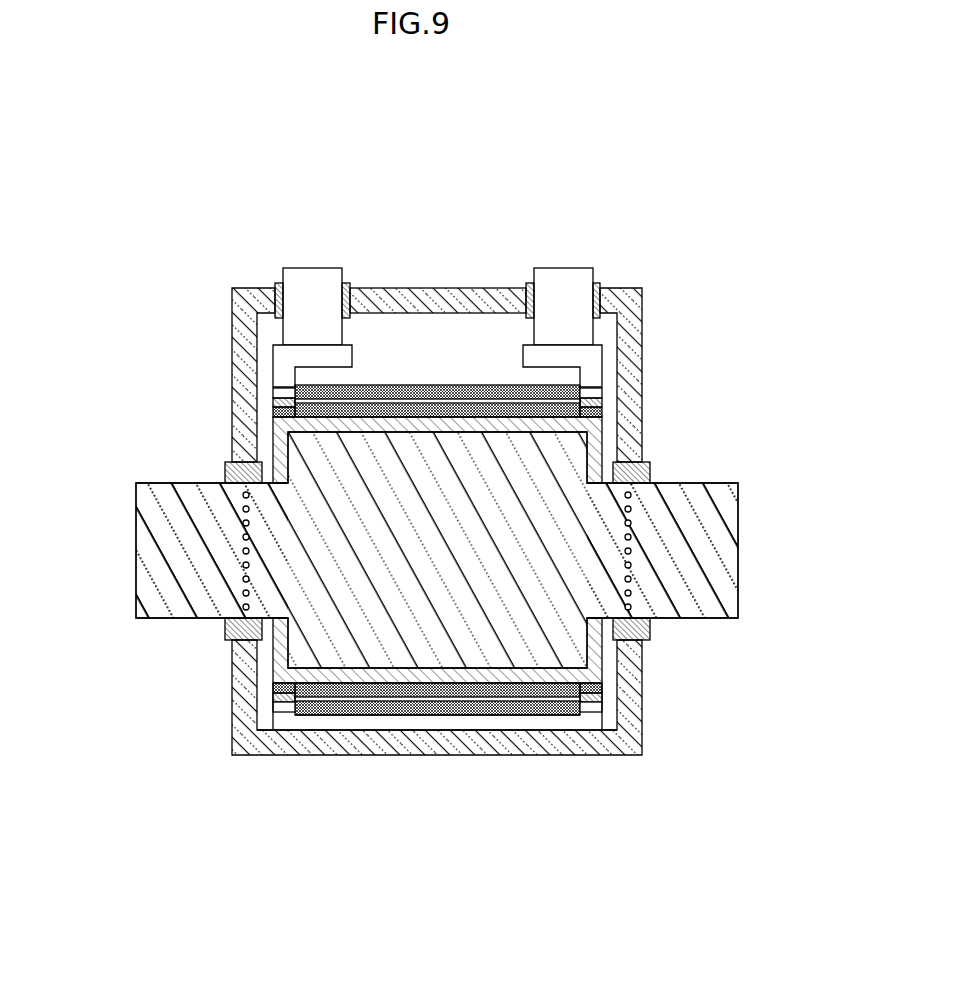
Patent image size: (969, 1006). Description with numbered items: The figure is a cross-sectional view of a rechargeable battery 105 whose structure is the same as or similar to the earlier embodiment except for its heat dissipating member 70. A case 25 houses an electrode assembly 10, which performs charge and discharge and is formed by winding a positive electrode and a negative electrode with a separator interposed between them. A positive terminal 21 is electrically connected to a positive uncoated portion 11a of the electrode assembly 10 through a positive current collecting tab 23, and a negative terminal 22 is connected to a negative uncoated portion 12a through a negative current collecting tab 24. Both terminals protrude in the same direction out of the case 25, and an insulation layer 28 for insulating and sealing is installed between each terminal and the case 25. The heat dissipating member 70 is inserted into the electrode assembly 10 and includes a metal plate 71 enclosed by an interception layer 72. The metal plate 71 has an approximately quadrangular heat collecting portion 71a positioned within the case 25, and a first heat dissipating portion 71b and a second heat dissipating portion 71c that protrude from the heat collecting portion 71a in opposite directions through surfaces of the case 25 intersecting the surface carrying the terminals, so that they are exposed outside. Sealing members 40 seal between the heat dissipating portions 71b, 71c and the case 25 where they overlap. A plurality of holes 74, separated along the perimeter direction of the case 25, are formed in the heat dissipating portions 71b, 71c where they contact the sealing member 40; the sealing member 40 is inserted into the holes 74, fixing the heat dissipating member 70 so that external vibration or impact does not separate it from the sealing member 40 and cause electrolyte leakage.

The rechargeable battery 105 is at (439, 148).
The electrode assembly 10 is at (462, 378).
The positive uncoated portion 11a is at (284, 390).
The negative uncoated portion 12a is at (591, 398).
The positive terminal 21 is at (310, 282).
The negative terminal 22 is at (555, 280).
The positive current collecting tab 23 is at (317, 353).
The negative current collecting tab 24 is at (577, 356).
The case 25 is at (632, 424).
The insulation layer 28 is at (348, 283).
The sealing member 40 is at (213, 470).
The heat dissipating member 70 is at (412, 690).
The metal plate 71 is at (480, 668).
The heat collecting portion 71a is at (320, 670).
The first heat dissipating portion 71b is at (150, 596).
The second heat dissipating portion 71c is at (708, 600).
The interception layer 72 is at (558, 676).
The holes 74 is at (245, 552).